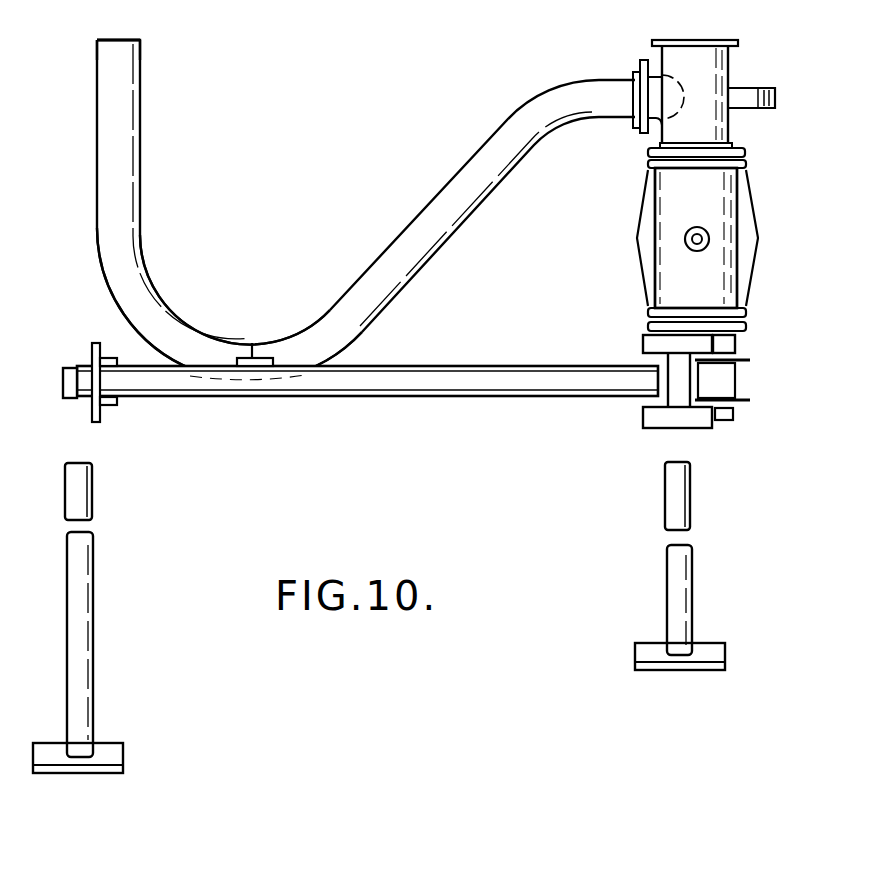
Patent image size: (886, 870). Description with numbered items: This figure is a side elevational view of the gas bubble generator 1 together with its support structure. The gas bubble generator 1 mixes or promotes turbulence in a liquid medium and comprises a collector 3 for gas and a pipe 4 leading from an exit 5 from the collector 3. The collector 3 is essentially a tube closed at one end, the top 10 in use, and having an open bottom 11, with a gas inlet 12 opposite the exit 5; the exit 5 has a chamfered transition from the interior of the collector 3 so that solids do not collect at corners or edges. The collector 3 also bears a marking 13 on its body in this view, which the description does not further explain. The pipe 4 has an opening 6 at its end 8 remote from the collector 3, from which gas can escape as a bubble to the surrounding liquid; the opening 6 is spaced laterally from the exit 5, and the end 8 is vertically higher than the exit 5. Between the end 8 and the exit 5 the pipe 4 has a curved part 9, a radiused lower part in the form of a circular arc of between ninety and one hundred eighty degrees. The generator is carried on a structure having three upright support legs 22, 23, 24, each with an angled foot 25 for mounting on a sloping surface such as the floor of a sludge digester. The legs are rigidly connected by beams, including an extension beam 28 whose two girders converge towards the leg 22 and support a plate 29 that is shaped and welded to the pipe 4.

The gas bubble generator 1 is at (598, 166).
The collector 3 is at (712, 202).
The pipe 4 is at (403, 233).
The exit 5 is at (665, 82).
The opening 6 is at (107, 40).
The end of the pipe 8 is at (140, 66).
The curved part 9 is at (302, 336).
The top 10 is at (715, 44).
The open bottom 11 is at (725, 418).
The gas inlet 12 is at (748, 108).
The converter casing 13 is at (710, 292).
The support leg 22 is at (85, 588).
The support leg 23 is at (616, 558).
The support leg 24 is at (667, 565).
The angled foot 25 is at (115, 748).
The extension beam 28 is at (476, 391).
The plate 29 is at (252, 343).